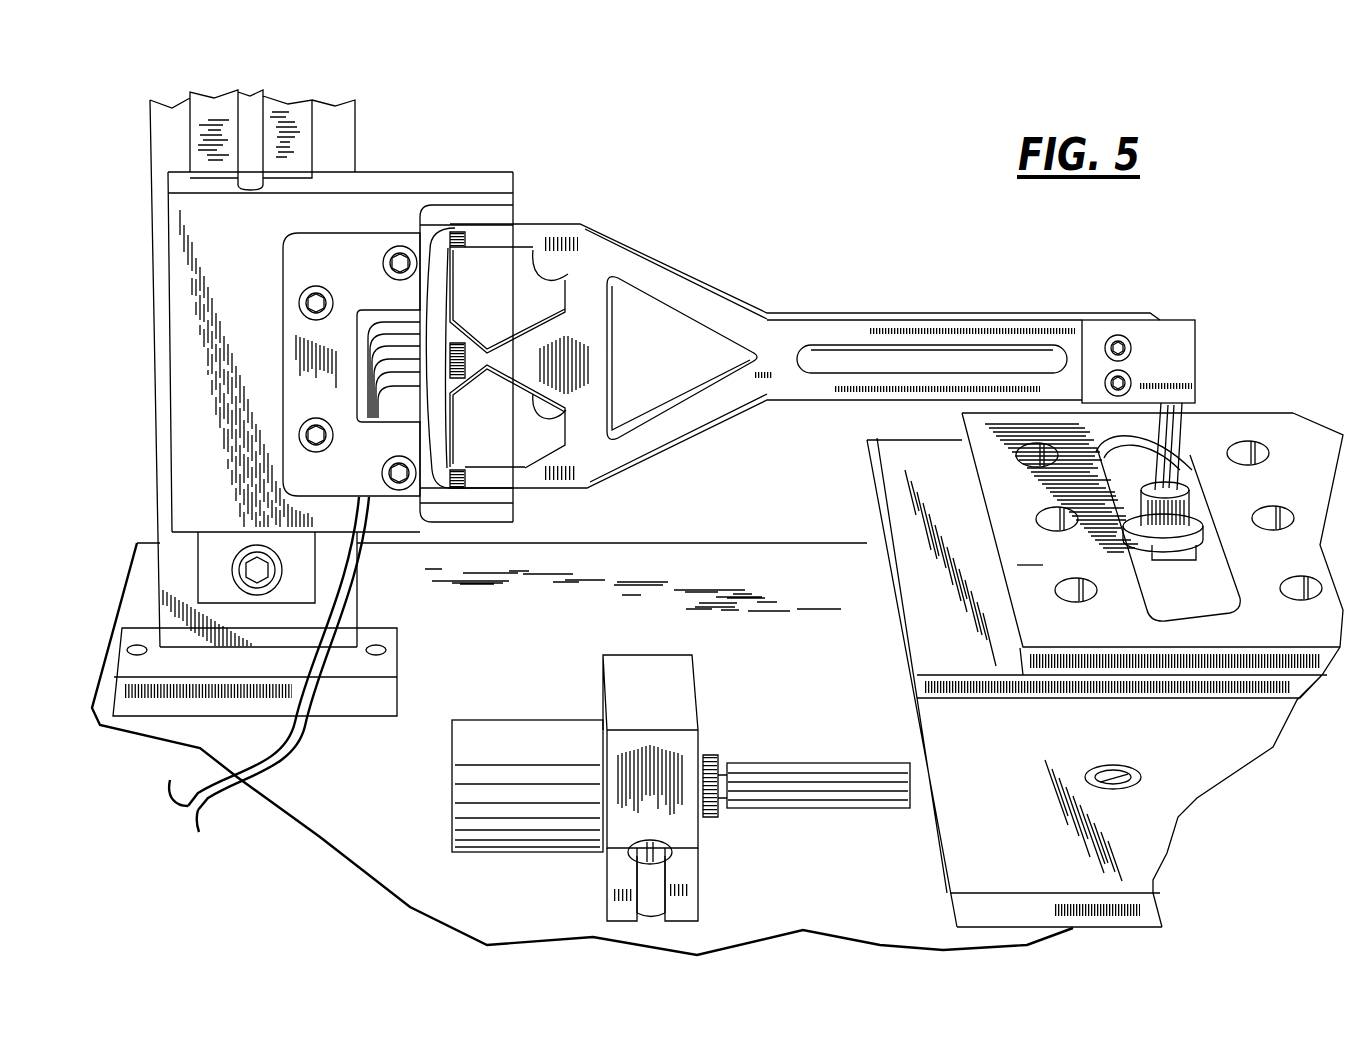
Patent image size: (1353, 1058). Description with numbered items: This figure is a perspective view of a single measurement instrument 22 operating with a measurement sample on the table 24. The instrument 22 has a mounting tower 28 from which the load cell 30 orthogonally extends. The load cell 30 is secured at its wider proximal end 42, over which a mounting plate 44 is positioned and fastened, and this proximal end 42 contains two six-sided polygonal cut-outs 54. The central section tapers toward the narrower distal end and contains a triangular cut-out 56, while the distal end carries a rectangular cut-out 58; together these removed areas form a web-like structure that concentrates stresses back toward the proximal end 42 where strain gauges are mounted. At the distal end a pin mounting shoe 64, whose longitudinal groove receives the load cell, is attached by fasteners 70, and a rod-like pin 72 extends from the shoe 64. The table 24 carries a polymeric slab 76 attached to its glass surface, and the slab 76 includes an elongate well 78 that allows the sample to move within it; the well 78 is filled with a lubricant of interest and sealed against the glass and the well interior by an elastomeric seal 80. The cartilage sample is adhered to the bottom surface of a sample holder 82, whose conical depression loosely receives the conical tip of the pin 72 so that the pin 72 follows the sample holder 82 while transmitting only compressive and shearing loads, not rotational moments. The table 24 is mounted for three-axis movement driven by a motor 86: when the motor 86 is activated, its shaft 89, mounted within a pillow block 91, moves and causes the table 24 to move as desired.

The measurement instrument 22 is at (798, 158).
The table 24 is at (985, 648).
The mounting tower 28 is at (167, 692).
The load cell 30 is at (815, 298).
The proximal end 42 is at (524, 208).
The mounting plate 44 is at (333, 255).
The six-sided polygonal cut-outs 54 is at (560, 268).
The triangular cut-out 56 is at (680, 310).
The rectangular cut-out 58 is at (913, 348).
The pin mounting shoe 64 is at (1148, 335).
The fasteners 70 is at (1122, 340).
The pin 72 is at (1173, 470).
The polymeric slab 76 is at (1151, 505).
The well 78 is at (1173, 590).
The elastomeric seal 80 is at (1178, 455).
The sample holder 82 is at (1183, 508).
The motor 86 is at (565, 745).
The shaft 89 is at (835, 790).
The pillow block 91 is at (676, 898).